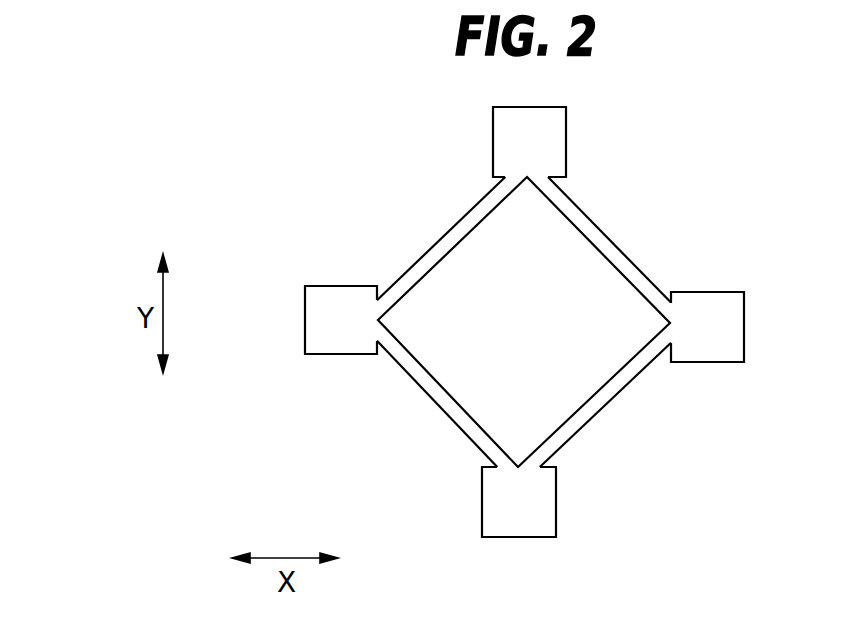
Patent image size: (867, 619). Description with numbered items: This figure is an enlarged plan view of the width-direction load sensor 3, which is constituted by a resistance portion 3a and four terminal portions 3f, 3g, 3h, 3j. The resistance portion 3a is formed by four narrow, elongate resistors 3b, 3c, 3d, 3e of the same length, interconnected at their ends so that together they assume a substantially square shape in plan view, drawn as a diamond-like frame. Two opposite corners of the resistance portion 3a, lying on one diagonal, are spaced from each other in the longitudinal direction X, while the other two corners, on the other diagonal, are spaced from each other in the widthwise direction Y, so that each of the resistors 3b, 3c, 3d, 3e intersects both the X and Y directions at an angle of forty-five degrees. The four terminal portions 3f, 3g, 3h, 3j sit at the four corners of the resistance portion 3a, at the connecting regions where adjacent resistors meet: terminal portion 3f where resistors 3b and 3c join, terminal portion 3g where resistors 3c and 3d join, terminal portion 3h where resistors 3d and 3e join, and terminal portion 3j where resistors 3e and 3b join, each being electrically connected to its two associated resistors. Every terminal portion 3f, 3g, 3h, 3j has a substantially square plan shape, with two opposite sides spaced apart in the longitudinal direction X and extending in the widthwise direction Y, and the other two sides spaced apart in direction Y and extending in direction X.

The width-direction load sensor 3 is at (428, 194).
The resistance portion 3a is at (603, 218).
The resistor 3b is at (447, 405).
The resistor 3c is at (425, 257).
The resistor 3d is at (632, 258).
The resistor 3e is at (628, 385).
The terminal portion 3f is at (305, 313).
The terminal portion 3g is at (562, 128).
The terminal portion 3h is at (744, 323).
The terminal portion 3j is at (530, 527).